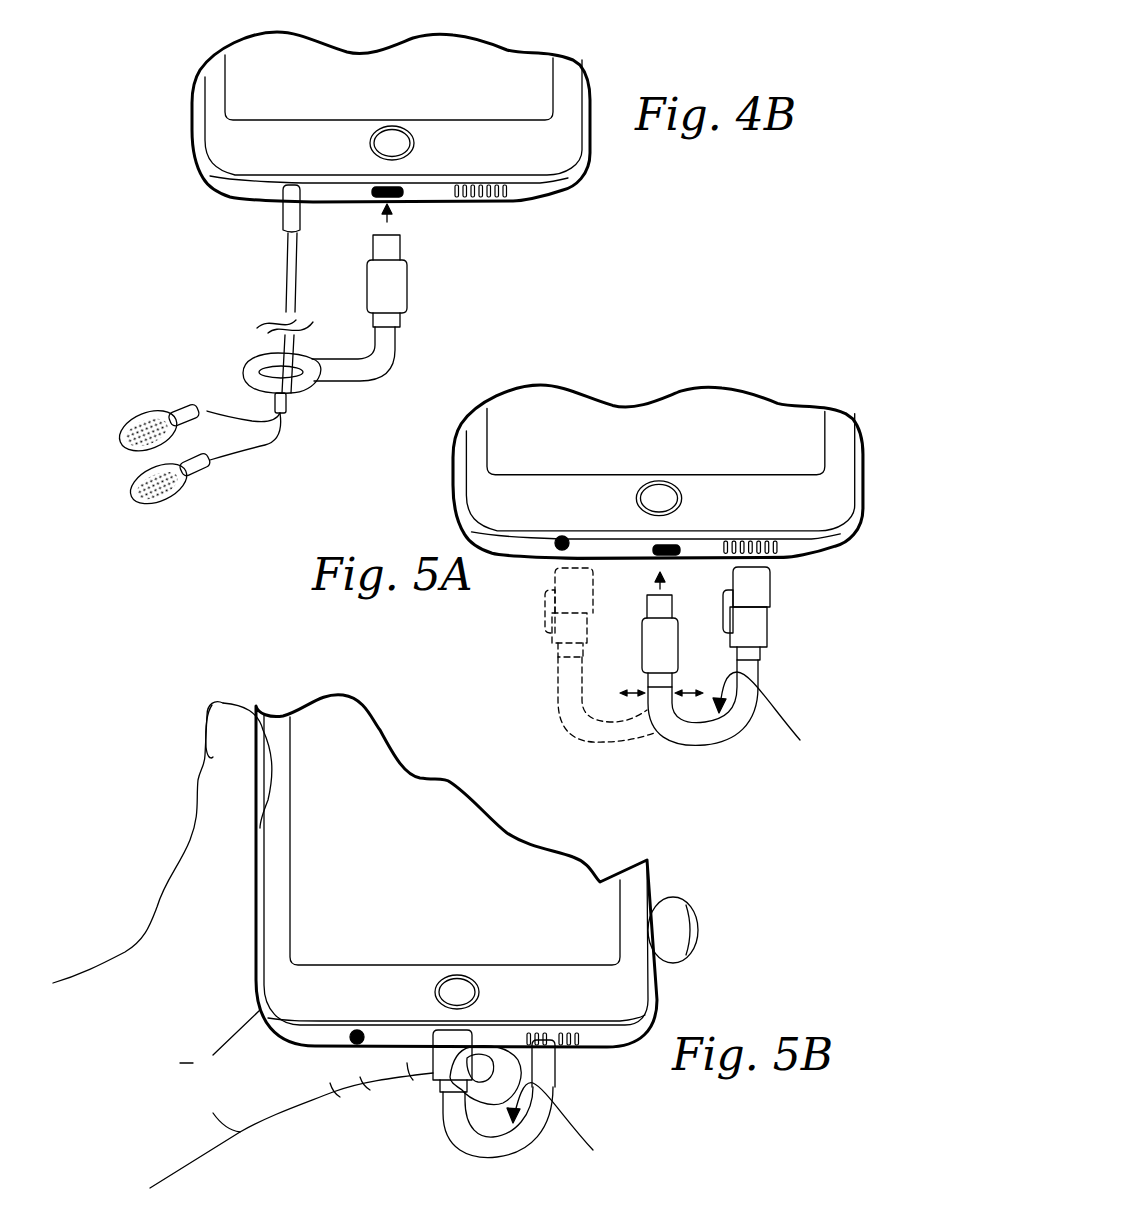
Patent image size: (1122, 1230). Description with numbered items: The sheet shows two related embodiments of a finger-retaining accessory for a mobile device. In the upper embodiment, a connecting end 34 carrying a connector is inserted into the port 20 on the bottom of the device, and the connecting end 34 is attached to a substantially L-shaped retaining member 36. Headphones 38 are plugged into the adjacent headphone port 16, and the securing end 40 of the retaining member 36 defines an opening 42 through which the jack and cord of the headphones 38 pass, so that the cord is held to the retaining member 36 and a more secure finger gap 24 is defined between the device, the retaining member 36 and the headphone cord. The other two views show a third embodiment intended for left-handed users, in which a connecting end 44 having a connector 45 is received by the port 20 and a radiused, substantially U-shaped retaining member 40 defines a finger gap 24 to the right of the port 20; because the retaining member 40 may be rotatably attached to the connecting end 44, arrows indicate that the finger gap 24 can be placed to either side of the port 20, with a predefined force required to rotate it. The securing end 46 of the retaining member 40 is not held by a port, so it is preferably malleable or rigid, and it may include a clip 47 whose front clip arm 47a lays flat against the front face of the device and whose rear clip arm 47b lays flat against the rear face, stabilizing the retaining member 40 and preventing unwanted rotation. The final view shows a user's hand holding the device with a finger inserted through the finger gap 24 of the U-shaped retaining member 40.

In FIG. 5A, the headphone port 16 is at (555, 553).
In FIG. 5A, the port 20 is at (665, 557).
In FIG. 5A, the finger gap 24 is at (772, 713).
In FIG. 5B, the finger gap 24 is at (564, 1125).
In FIG. 4B, the connecting end 34 is at (400, 243).
In FIG. 4B, the retaining member 36 is at (382, 362).
In FIG. 4B, the headphones 38 is at (287, 258).
In FIG. 4B, the securing end 40 is at (250, 375).
In FIG. 5A, the securing end 40 is at (697, 733).
In FIG. 5B, the securing end 40 is at (495, 1143).
In FIG. 4B, the opening 42 is at (297, 387).
In FIG. 5A, the connecting end 44 is at (645, 630).
In FIG. 5B, the connecting end 44 is at (430, 1073).
In FIG. 5A, the connector 45 is at (675, 608).
In FIG. 5A, the securing end 46 is at (763, 637).
In FIG. 5B, the securing end 46 is at (552, 1040).
In FIG. 5A, the clip 47 is at (780, 602).
In FIG. 5A, the front clip arm 47a is at (770, 578).
In FIG. 5A, the rear clip arm 47b is at (723, 598).